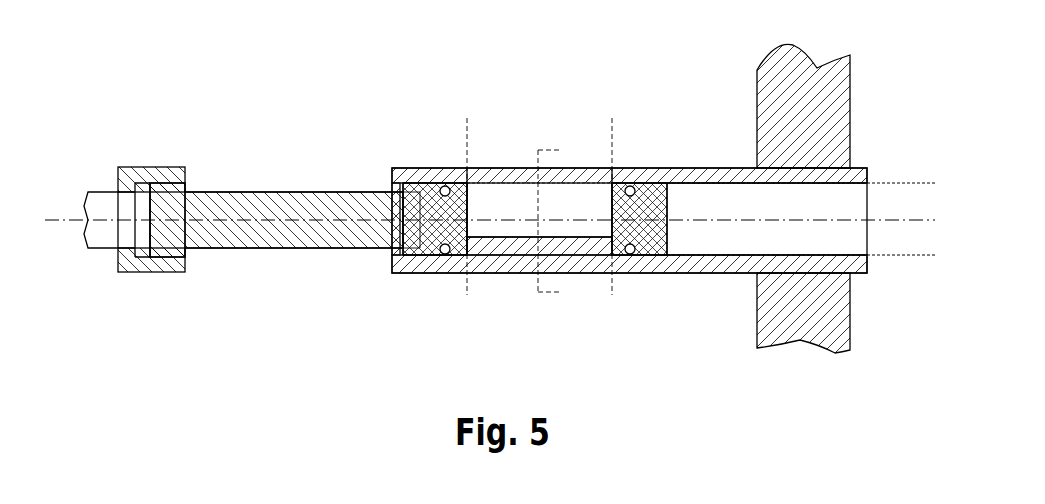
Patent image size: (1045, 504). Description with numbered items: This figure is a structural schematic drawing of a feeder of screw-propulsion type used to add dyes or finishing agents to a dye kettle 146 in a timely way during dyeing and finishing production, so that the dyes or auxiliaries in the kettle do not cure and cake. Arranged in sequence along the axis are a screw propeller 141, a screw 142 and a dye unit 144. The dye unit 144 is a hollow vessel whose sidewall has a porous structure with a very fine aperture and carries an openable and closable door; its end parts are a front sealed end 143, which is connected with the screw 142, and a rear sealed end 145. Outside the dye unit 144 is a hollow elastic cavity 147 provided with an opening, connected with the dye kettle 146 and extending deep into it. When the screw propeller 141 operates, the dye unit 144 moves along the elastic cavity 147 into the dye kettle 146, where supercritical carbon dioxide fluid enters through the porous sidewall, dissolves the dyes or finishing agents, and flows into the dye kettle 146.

The screw propeller 141 is at (112, 221).
The screw 142 is at (320, 210).
The front sealed end 143 is at (433, 210).
The dye unit 144 is at (520, 200).
The rear sealed end 145 is at (620, 205).
The dye kettle 146 is at (805, 115).
The elastic cavity 147 is at (720, 212).